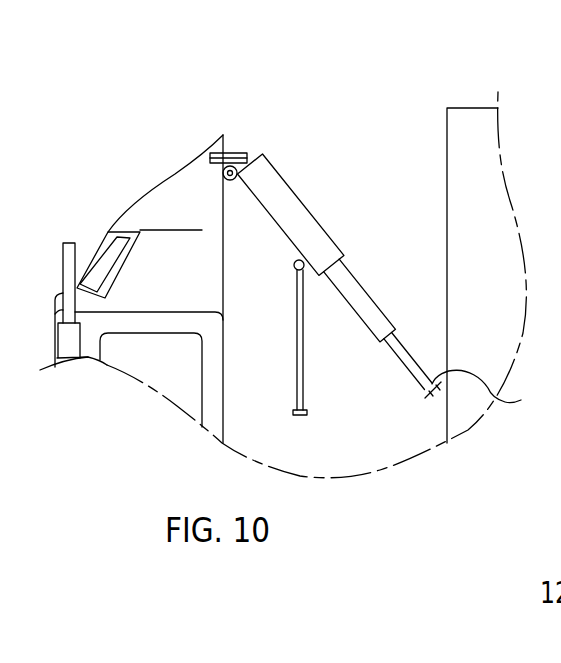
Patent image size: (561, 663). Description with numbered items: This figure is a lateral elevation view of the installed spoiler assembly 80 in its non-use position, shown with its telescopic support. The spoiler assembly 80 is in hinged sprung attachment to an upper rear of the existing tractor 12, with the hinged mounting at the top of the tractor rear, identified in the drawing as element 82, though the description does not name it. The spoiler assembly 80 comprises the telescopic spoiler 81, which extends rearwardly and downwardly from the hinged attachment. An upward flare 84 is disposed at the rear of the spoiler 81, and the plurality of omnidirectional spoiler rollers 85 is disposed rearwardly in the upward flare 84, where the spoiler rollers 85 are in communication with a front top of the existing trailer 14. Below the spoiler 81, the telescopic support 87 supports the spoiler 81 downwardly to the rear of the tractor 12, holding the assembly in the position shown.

The existing tractor 12 is at (143, 208).
The existing trailer 14 is at (467, 130).
The spoiler assembly 80 is at (381, 274).
The telescopic spoiler 81 is at (312, 227).
The mounting bracket 82 is at (235, 148).
The upward flare 84 is at (492, 394).
The omnidirectional spoiler rollers 85 is at (436, 403).
The telescopic support 87 is at (305, 397).